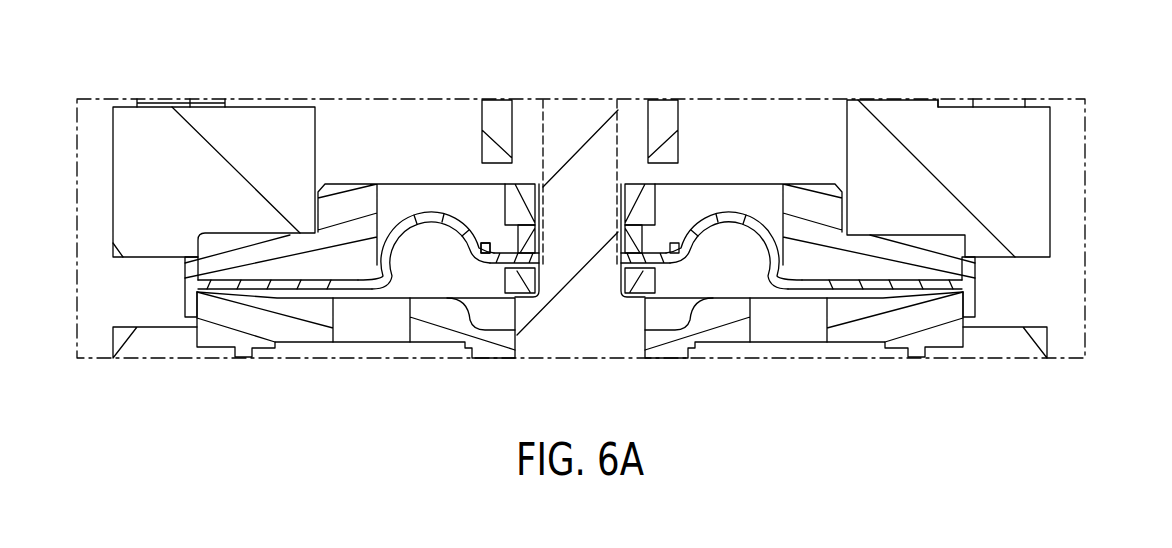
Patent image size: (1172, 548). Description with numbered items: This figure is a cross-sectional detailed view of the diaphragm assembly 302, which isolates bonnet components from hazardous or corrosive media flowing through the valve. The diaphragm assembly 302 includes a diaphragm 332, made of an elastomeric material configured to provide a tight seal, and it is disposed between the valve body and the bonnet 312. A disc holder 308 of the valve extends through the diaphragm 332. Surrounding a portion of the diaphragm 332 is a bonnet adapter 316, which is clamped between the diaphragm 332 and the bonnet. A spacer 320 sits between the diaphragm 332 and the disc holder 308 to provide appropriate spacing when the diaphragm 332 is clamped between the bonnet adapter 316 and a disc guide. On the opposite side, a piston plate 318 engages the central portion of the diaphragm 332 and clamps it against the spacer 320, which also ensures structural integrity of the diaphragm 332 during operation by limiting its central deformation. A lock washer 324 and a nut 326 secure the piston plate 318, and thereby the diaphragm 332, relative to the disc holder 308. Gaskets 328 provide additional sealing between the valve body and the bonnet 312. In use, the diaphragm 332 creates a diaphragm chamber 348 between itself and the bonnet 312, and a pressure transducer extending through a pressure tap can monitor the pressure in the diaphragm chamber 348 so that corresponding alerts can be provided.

The diaphragm assembly 302 is at (1013, 45).
The disc holder 308 is at (587, 330).
The bonnet 312 is at (1050, 180).
The bonnet adapter 316 is at (185, 278).
The piston plate 318 is at (488, 243).
The spacer 320 is at (658, 283).
The lock washer 324 is at (648, 238).
The nut 326 is at (650, 190).
The gaskets 328 is at (635, 297).
The diaphragm 332 is at (410, 212).
The diaphragm chamber 348 is at (757, 206).